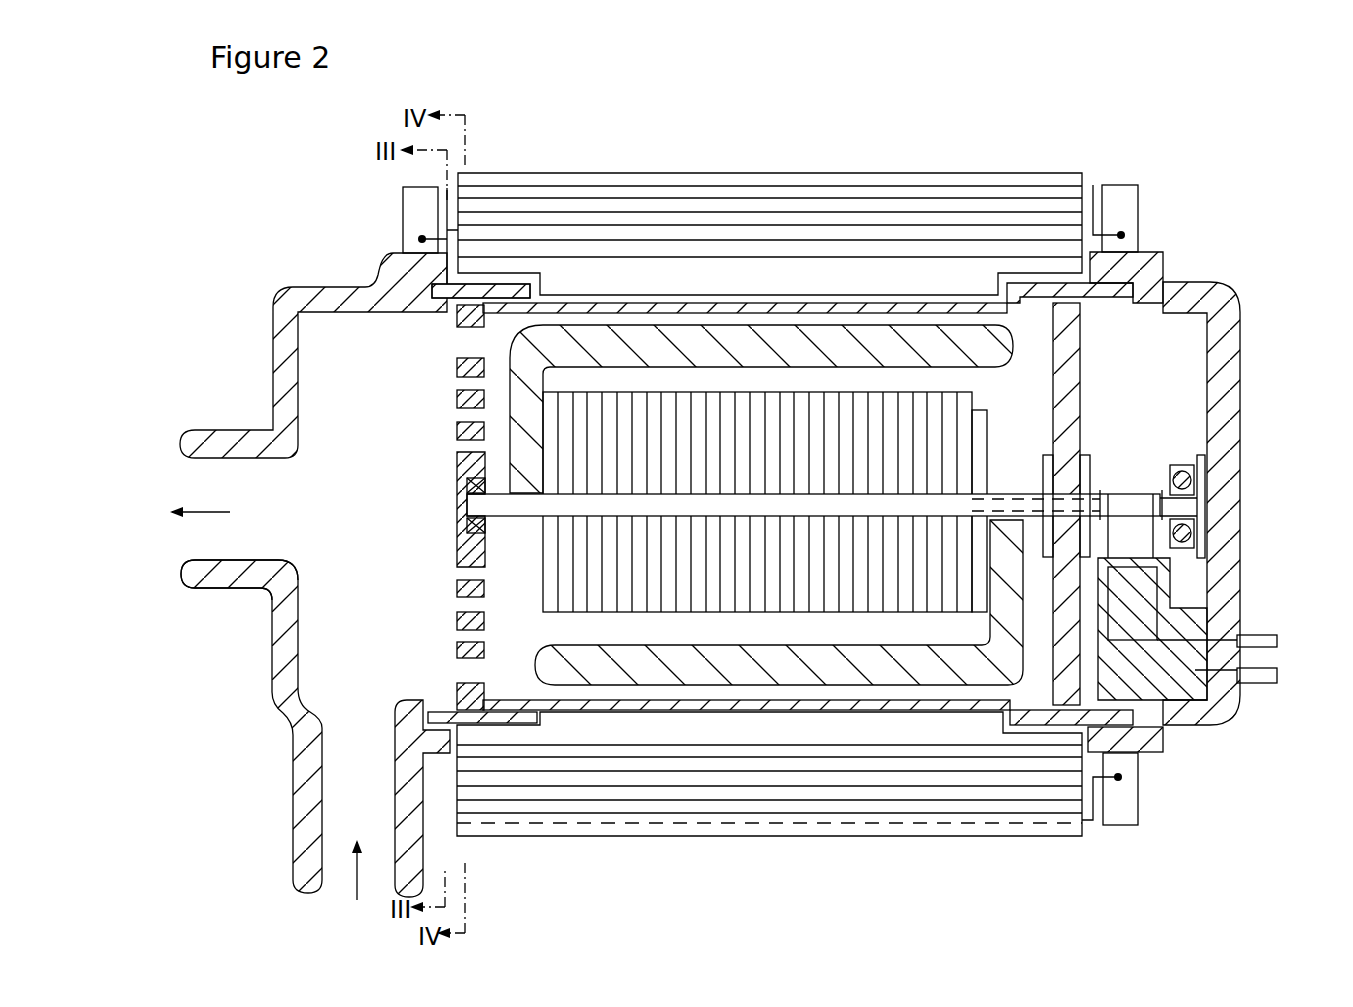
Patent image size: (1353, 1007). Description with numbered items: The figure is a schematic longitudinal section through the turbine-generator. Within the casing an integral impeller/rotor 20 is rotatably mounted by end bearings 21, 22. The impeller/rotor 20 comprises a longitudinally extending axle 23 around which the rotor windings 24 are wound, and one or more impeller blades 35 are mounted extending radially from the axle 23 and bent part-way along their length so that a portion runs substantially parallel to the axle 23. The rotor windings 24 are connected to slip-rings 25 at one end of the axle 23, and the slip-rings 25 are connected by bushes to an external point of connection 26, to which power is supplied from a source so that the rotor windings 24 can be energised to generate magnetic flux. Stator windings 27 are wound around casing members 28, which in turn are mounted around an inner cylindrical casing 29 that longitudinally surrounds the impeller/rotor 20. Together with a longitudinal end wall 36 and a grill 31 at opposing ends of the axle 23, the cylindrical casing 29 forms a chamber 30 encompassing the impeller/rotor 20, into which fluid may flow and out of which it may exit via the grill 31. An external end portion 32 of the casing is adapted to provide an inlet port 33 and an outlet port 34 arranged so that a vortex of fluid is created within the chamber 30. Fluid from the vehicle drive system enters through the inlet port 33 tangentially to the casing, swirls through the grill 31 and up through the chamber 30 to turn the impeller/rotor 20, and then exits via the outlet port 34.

The integral impeller/rotor 20 is at (494, 350).
The end bearing 21 is at (470, 480).
The end bearing 22 is at (1178, 465).
The axle 23 is at (503, 516).
The rotor windings 24 is at (985, 412).
The slip-rings 25 is at (1153, 493).
The external point of connection 26 is at (1265, 650).
The stator windings 27 is at (686, 187).
The casing members 28 is at (773, 173).
The inner cylindrical casing 29 is at (786, 302).
The chamber 30 is at (1032, 410).
The grill 31 is at (457, 590).
The external end portion 32 is at (268, 345).
The inlet port 33 is at (296, 815).
The outlet port 34 is at (220, 568).
The impeller blades 35 is at (922, 340).
The longitudinal end wall 36 is at (1073, 352).